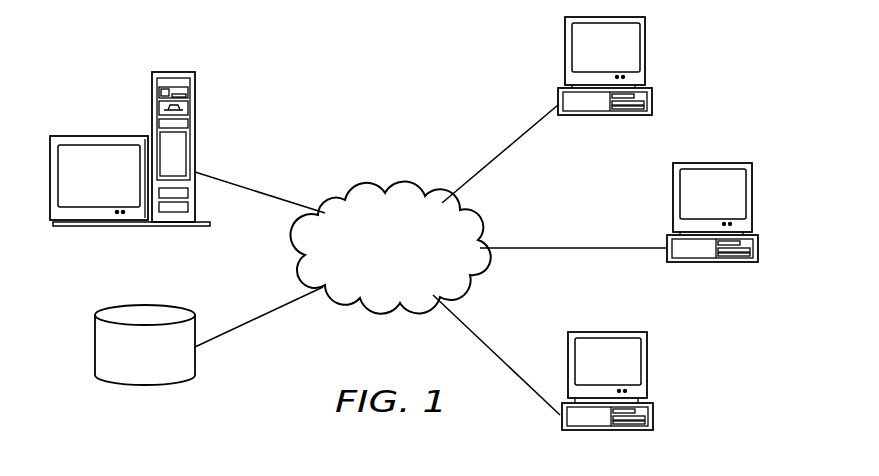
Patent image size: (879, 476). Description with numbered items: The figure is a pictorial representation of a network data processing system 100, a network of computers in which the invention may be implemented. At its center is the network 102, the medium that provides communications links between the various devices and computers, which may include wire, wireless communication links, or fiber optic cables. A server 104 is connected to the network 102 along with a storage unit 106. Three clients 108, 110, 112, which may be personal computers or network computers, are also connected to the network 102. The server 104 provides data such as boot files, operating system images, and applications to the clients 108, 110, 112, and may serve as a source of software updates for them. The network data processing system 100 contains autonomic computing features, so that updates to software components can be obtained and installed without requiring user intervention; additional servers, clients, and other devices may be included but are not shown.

The network data processing system 100 is at (277, 57).
The network 102 is at (414, 275).
The server 104 is at (155, 95).
The storage unit 106 is at (94, 344).
The client 108 is at (647, 57).
The client 110 is at (753, 200).
The client 112 is at (648, 370).